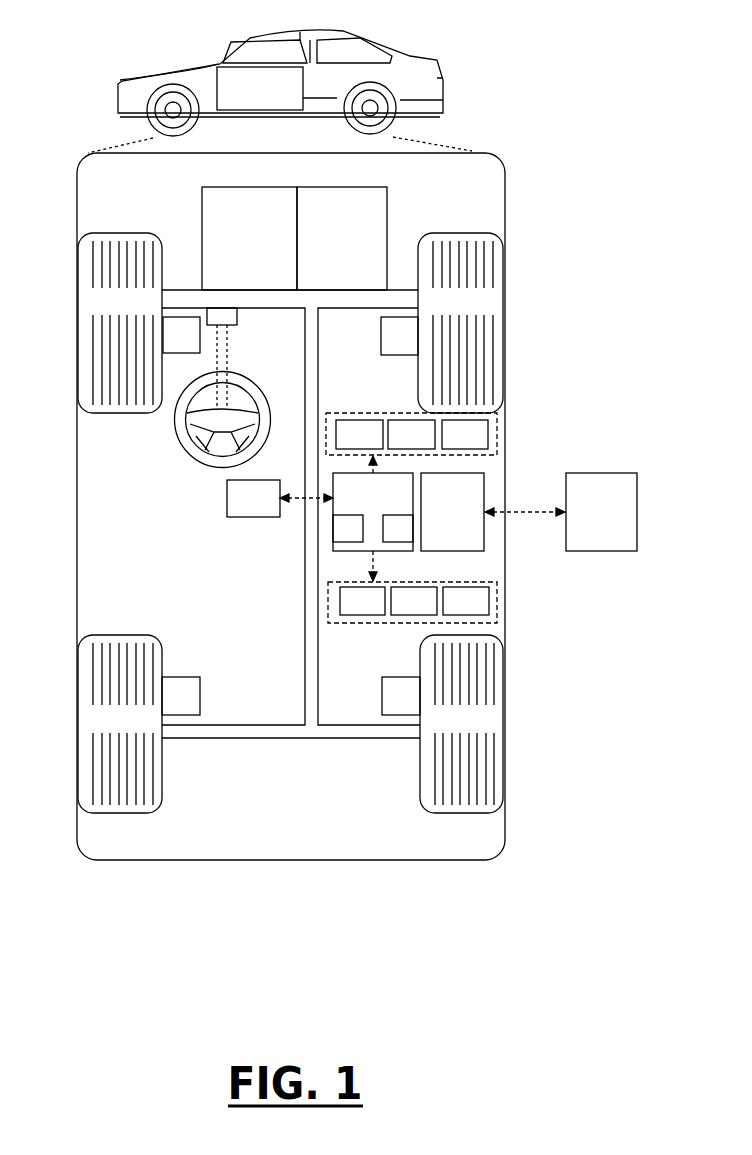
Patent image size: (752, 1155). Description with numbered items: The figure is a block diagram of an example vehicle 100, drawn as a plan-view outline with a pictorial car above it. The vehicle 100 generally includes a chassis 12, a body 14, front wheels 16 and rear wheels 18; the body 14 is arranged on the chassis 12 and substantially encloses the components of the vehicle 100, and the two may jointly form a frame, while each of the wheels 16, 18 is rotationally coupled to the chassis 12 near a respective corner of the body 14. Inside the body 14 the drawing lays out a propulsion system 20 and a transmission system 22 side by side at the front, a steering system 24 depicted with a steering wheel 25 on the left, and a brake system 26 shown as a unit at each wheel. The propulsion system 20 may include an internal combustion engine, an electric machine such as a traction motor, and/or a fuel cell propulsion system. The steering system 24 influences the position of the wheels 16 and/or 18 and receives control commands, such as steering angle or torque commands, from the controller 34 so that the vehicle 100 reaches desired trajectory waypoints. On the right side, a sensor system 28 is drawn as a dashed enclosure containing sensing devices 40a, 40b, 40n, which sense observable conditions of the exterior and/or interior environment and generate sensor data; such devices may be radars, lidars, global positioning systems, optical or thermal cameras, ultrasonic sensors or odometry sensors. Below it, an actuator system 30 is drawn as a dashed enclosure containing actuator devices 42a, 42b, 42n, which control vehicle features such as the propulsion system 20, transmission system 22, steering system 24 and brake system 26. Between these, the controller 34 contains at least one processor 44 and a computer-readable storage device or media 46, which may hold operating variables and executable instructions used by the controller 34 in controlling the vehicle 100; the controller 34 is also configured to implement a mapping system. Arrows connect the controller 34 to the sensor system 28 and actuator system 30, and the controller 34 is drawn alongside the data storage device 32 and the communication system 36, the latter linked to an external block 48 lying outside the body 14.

The vehicle 100 is at (535, 352).
The chassis 12 is at (313, 739).
The body 14 is at (76, 476).
The front wheels 16 is at (112, 308).
The rear wheels 18 is at (112, 726).
The propulsion system 20 is at (242, 246).
The transmission system 22 is at (334, 246).
The steering system 24 is at (190, 481).
The steering wheel 25 is at (255, 375).
The brake system 26 is at (173, 343).
The sensor system 28 is at (411, 413).
The actuator system 30 is at (412, 622).
The data storage device 32 is at (245, 506).
The controller 34 is at (373, 518).
The communication system 36 is at (445, 520).
The sensing device 40a is at (347, 443).
The sensing device 40b is at (399, 443).
The sensing device 40n is at (453, 443).
The actuator device 42a is at (350, 609).
The actuator device 42b is at (402, 609).
The actuator device 42n is at (454, 609).
The processor 44 is at (340, 537).
The computer-readable storage device or media 46 is at (390, 537).
The remote system 48 is at (593, 520).